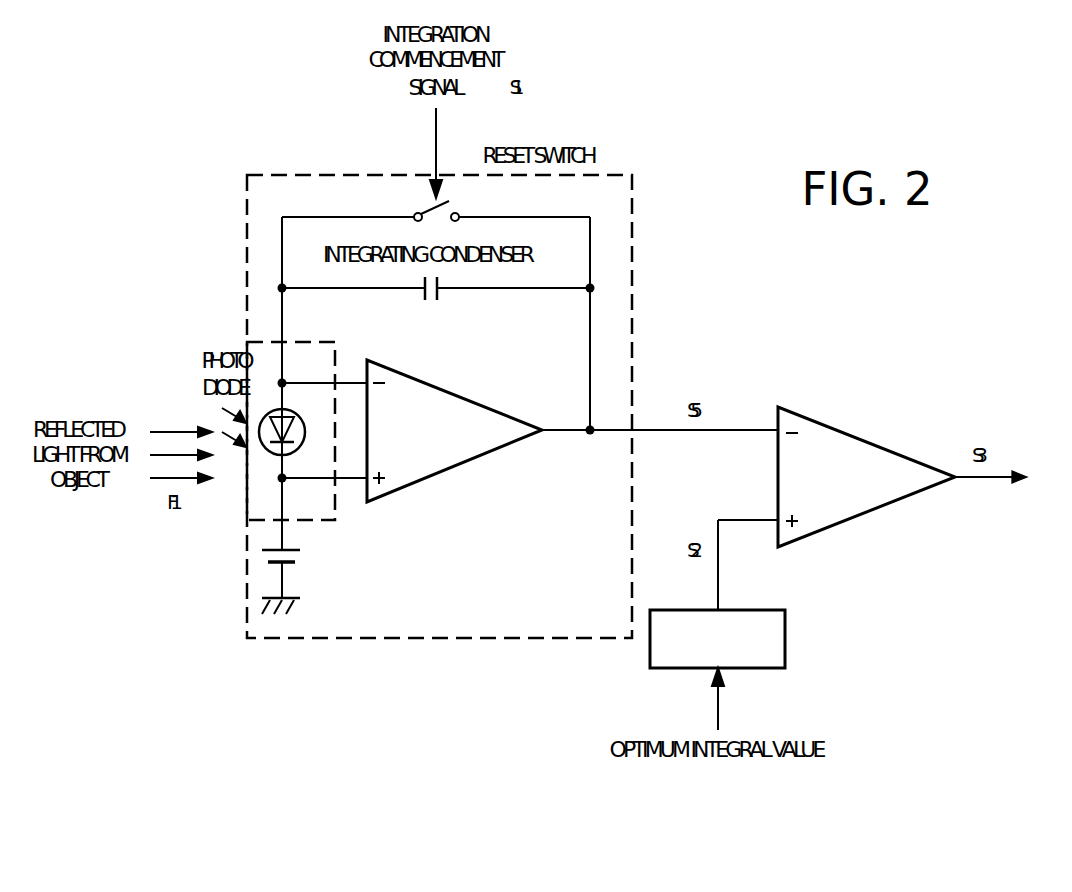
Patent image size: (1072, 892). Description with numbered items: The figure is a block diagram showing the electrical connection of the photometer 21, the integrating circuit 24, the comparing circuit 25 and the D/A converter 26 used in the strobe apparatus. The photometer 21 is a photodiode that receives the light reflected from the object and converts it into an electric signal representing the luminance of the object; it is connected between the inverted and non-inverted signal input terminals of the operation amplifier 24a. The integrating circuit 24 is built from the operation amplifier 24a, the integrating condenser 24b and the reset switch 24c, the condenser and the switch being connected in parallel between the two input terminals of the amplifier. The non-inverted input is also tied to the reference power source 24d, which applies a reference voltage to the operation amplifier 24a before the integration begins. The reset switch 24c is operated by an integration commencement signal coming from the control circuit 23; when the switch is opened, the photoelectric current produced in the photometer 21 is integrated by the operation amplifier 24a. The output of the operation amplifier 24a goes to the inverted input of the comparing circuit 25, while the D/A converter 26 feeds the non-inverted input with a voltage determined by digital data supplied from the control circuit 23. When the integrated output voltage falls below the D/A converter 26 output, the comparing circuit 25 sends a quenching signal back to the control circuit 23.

The photometer 21 is at (275, 457).
The control circuit 23 is at (1005, 477).
The integrating circuit 24 is at (645, 282).
The operation amplifier 24a is at (440, 473).
The integrating condenser 24b is at (430, 301).
The reset switch 24c is at (432, 208).
The reference power source 24d is at (297, 555).
The comparing circuit 25 is at (867, 437).
The D/A converter 26 is at (785, 632).